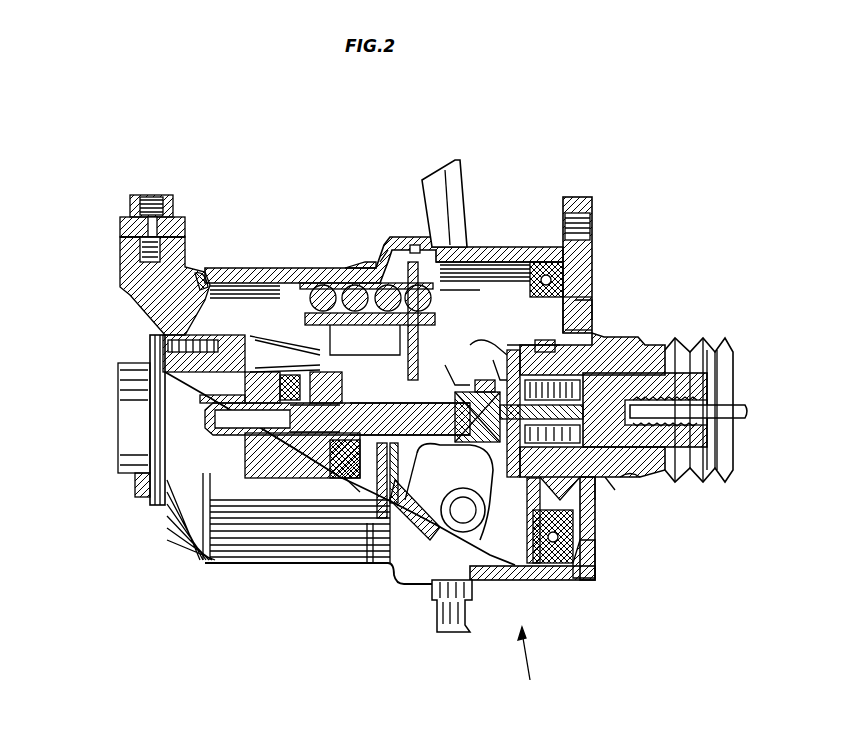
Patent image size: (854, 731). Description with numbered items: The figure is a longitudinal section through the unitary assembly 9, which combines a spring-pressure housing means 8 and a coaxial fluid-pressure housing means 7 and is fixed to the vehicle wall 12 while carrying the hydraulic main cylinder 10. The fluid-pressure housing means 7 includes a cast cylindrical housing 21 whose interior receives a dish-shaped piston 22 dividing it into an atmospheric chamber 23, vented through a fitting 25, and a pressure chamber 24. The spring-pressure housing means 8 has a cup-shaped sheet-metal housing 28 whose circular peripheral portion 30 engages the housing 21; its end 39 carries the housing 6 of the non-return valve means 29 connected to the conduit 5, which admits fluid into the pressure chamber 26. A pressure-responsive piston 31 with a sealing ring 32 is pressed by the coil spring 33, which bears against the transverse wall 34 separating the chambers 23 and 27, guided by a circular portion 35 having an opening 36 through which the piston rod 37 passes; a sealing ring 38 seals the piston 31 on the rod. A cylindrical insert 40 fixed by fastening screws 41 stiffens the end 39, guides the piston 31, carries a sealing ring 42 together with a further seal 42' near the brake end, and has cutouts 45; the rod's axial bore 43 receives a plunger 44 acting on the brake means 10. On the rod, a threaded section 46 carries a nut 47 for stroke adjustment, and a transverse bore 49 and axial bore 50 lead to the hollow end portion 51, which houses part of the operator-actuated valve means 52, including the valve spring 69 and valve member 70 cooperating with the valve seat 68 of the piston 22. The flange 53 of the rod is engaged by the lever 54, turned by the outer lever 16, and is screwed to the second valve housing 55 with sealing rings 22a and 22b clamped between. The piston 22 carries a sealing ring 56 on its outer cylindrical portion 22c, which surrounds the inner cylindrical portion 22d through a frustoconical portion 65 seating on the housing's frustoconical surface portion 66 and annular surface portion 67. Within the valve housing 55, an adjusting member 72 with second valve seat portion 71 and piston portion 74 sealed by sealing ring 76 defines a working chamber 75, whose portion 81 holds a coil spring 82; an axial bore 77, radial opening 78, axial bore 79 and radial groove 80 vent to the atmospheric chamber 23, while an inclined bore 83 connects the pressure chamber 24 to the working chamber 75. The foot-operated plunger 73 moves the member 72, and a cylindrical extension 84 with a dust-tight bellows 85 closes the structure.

The conduit 5 is at (150, 195).
The housing of the non-return valve means 6 is at (120, 222).
The fluid-pressure housing means 7 is at (470, 580).
The spring-pressure housing means 8 is at (355, 563).
The unitary assembly 9 is at (531, 662).
The hydraulic main cylinder 10 is at (118, 455).
The vehicle wall 12 is at (580, 205).
The lever 16 is at (432, 186).
The housing 21 is at (505, 250).
The piston 22 is at (540, 262).
The sealing ring 22a is at (517, 345).
The sealing ring 22b is at (445, 455).
The outer cylindrical portion 22c is at (573, 280).
The inner cylindrical portion 22d is at (575, 295).
The atmospheric chamber 23 is at (483, 258).
The pressure chamber 24 is at (590, 580).
The fitting 25 is at (452, 635).
The pressure chamber 26 is at (235, 270).
The chamber 27 is at (380, 260).
The housing 28 is at (340, 266).
The non-return valve means 29 is at (120, 263).
The circular peripheral portion 30 is at (413, 244).
The piston 31 is at (320, 285).
The sealing ring 32 is at (280, 282).
The coil spring 33 is at (357, 283).
The transverse wall 34 is at (467, 285).
The circular portion 35 is at (420, 330).
The opening 36 is at (380, 500).
The piston rod 37 is at (365, 495).
The sealing ring 38 is at (375, 340).
The end 39 is at (205, 275).
The cylindrical insert 40 is at (165, 327).
The fastening screws 41 is at (135, 490).
The sealing ring 42 is at (278, 385).
The seal retainer 42' is at (207, 411).
The axial bore 43 is at (245, 437).
The plunger 44 is at (240, 433).
The cutouts 45 is at (255, 335).
The threaded section 46 is at (345, 455).
The nut 47 is at (345, 480).
The transverse bore 49 is at (288, 418).
The axial bore 50 is at (345, 388).
The hollow end portion 51 is at (452, 437).
The operator-actuated valve means 52 is at (425, 500).
The flange 53 is at (505, 345).
The lever 54 is at (405, 522).
The second valve housing 55 is at (615, 345).
The sealing ring 56 is at (553, 565).
The frustoconical portion 65 is at (585, 315).
The frustoconical surface portion 66 is at (585, 545).
The annular surface portion 67 is at (580, 335).
The valve seat 68 is at (475, 384).
The valve spring 69 is at (456, 400).
The valve member 70 is at (458, 365).
The second valve seat portion 71 is at (493, 360).
The adjusting member 72 is at (635, 362).
The plunger 73 is at (740, 405).
The piston portion 74 is at (598, 495).
The working chamber 75 is at (540, 485).
The sealing ring 76 is at (635, 476).
The axial bore 77 is at (625, 400).
The radial opening 78 is at (614, 483).
The axial bore 79 is at (575, 480).
The radial groove 80 is at (478, 515).
The portion of the working chamber 81 is at (558, 380).
The coil spring 82 is at (508, 478).
The inclined bore 83 is at (543, 343).
The cylindrical extension 84 is at (718, 468).
The bellows 85 is at (735, 446).